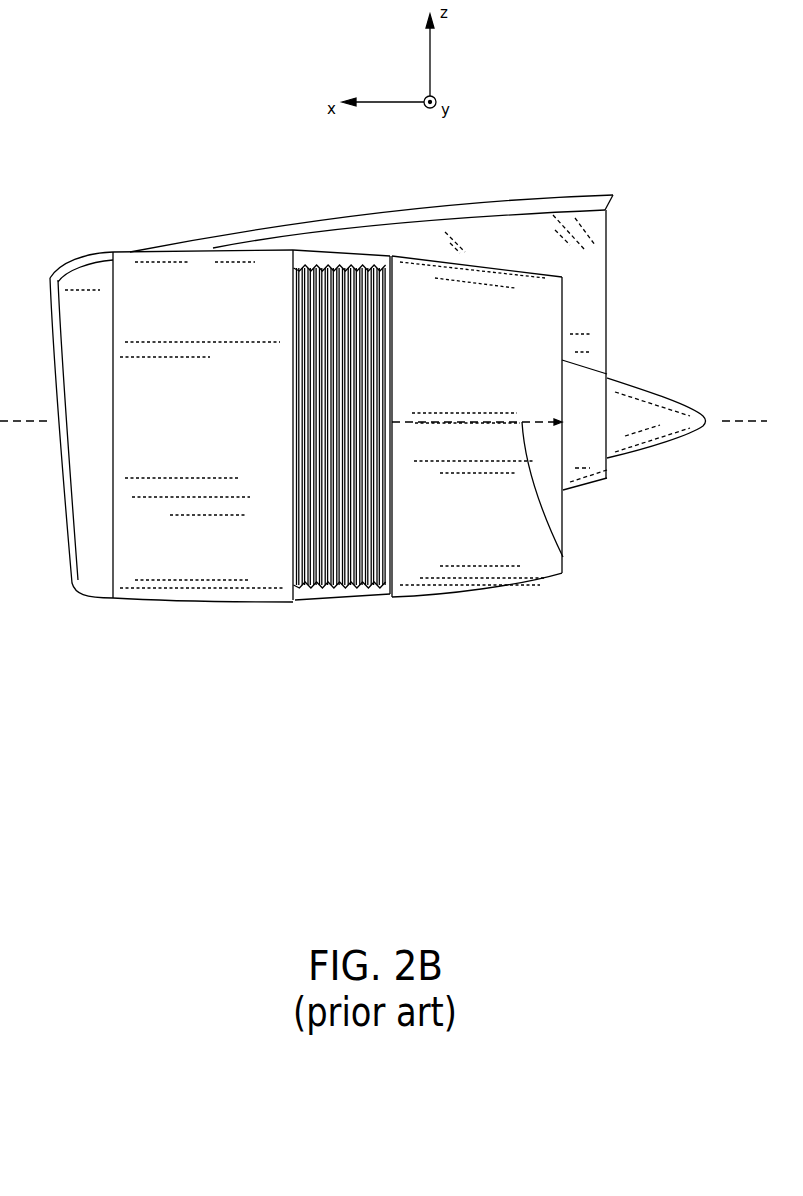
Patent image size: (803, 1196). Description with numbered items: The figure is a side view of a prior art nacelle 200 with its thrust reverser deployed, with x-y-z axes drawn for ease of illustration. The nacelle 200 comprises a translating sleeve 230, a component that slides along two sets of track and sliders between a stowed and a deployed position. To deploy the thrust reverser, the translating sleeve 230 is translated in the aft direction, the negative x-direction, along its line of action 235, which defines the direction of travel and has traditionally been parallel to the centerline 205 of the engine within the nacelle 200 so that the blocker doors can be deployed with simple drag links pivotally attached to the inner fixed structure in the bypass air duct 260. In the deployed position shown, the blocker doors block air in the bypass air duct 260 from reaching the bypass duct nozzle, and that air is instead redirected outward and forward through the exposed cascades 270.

The nacelle 200 is at (125, 107).
The centerline 205 is at (748, 422).
The translating sleeve 230 is at (468, 593).
The line of action 235 is at (562, 573).
The bypass air duct 260 is at (577, 525).
The cascades 270 is at (345, 590).